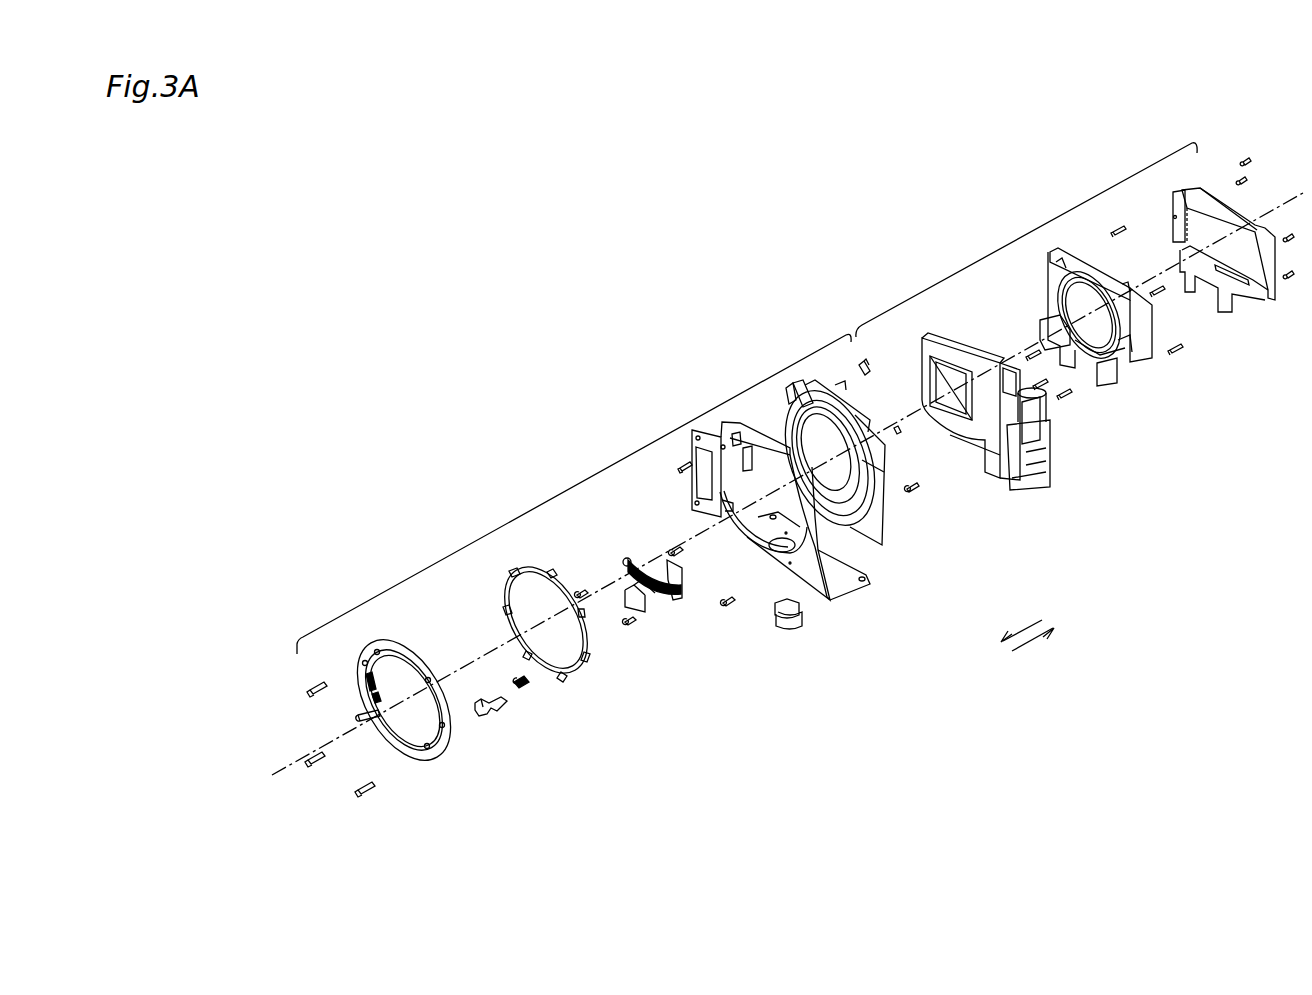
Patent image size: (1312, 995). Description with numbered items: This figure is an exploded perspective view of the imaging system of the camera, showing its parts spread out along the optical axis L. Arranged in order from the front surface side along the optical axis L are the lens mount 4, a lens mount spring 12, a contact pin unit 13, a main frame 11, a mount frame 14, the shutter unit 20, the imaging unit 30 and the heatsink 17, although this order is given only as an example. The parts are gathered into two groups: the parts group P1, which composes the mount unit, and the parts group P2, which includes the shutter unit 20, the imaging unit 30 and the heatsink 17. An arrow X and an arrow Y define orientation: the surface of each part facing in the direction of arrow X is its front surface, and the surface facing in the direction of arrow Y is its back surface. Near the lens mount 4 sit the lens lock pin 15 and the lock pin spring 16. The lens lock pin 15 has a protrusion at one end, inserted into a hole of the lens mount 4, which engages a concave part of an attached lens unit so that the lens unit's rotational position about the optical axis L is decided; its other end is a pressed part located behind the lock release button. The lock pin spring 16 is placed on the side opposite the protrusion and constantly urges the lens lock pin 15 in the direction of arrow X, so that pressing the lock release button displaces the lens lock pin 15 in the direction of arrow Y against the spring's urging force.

The lens mount 4 is at (441, 747).
The main frame 11 is at (866, 582).
The lens mount spring 12 is at (586, 662).
The contact pin unit 13 is at (668, 608).
The mount frame 14 is at (886, 540).
The lens lock pin 15 is at (486, 724).
The lock pin spring 16 is at (524, 692).
The heatsink 17 is at (1260, 300).
The shutter unit 20 is at (1035, 480).
The imaging unit 30 is at (1124, 388).
The optical axis L is at (298, 753).
The parts group P1 is at (595, 480).
The parts group P2 is at (1040, 231).
The arrow X is at (1024, 625).
The arrow Y is at (1032, 643).